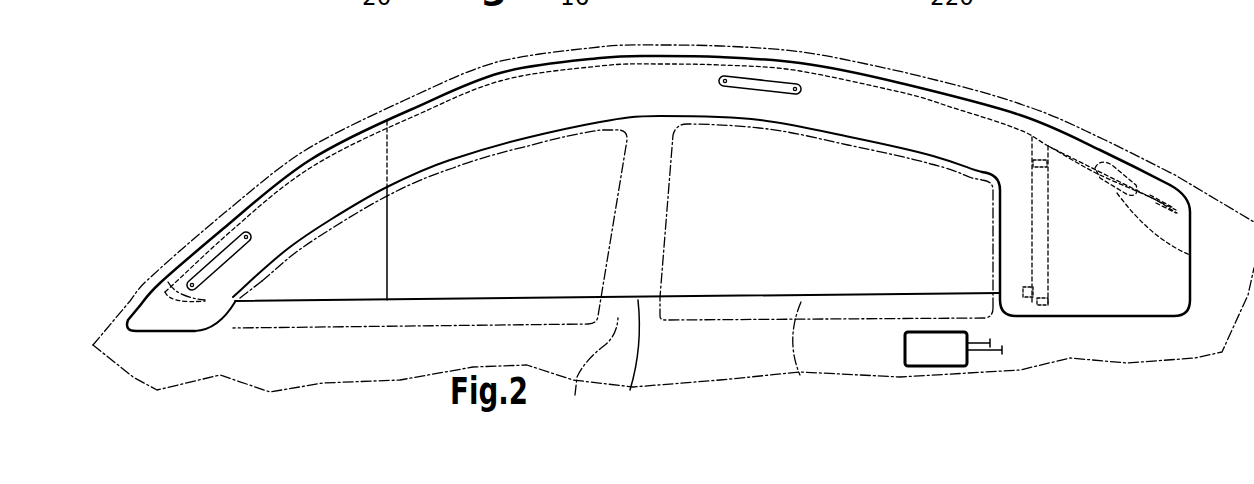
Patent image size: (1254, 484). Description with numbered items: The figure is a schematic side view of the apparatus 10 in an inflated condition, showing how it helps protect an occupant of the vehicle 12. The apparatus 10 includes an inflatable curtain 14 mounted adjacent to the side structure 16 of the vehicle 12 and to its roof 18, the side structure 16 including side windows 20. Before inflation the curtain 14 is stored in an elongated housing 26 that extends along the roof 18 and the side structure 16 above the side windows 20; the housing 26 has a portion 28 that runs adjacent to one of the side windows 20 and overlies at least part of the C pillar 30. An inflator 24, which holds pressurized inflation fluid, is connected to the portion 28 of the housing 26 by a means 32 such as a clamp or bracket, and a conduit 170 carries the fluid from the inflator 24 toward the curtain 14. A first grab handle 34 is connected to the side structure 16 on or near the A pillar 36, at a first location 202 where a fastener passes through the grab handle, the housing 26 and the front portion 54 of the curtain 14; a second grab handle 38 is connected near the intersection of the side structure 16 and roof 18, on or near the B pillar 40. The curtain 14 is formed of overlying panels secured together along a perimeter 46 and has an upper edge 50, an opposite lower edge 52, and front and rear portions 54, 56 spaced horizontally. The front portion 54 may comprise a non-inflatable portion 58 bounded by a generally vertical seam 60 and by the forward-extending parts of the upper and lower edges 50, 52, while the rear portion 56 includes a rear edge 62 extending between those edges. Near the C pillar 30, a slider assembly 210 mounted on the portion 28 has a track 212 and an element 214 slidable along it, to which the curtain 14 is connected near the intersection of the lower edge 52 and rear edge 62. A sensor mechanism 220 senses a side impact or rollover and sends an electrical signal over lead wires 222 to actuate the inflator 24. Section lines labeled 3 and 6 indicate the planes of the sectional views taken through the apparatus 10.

The apparatus 10 is at (495, 50).
The vehicle 12 is at (312, 80).
The inflatable curtain 14 is at (493, 263).
The side structure 16 is at (590, 368).
The roof 18 is at (583, 52).
The side windows 20 is at (407, 377).
The inflator 24 is at (1122, 180).
The housing 26 is at (353, 173).
The portion of the housing 28 is at (1143, 300).
The C pillar 30 is at (1073, 340).
The means 32 is at (1190, 255).
The first grab handle 34 is at (215, 260).
The A pillar 36 is at (283, 167).
The second grab handle 38 is at (760, 80).
The B pillar 40 is at (642, 237).
The perimeter 46 is at (549, 263).
The upper edge 50 is at (637, 57).
The lower edge 52 is at (629, 359).
The front portion 54 is at (302, 267).
The rear portion 56 is at (967, 190).
The non-inflatable portion 58 is at (353, 268).
The seam 60 is at (388, 240).
The rear edge 62 is at (1023, 240).
The conduit 170 is at (1060, 163).
The first location 202 is at (190, 285).
The slider assembly 210 is at (1050, 229).
The track 212 is at (1050, 261).
The element 214 is at (1023, 283).
The sensor mechanism 220 is at (930, 367).
The lead wires 222 is at (978, 355).
The section line 3- 3 is at (682, 55).
The section line 6- 6 is at (155, 240).